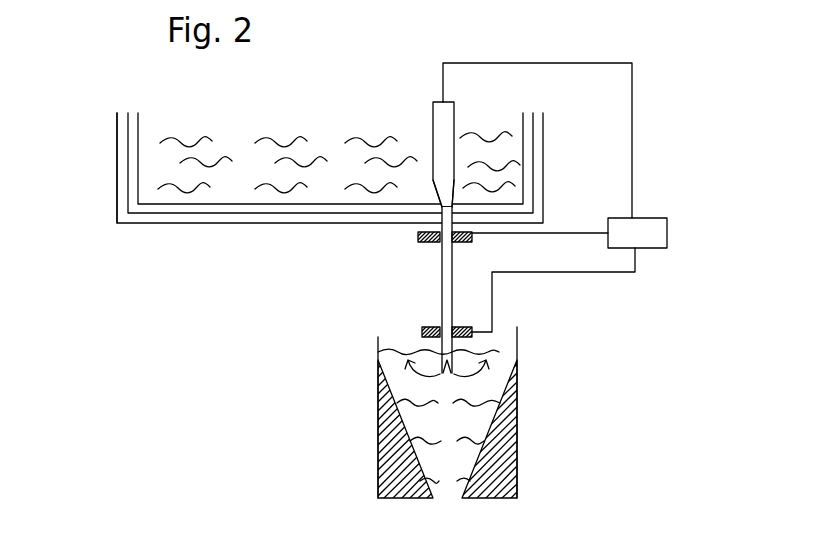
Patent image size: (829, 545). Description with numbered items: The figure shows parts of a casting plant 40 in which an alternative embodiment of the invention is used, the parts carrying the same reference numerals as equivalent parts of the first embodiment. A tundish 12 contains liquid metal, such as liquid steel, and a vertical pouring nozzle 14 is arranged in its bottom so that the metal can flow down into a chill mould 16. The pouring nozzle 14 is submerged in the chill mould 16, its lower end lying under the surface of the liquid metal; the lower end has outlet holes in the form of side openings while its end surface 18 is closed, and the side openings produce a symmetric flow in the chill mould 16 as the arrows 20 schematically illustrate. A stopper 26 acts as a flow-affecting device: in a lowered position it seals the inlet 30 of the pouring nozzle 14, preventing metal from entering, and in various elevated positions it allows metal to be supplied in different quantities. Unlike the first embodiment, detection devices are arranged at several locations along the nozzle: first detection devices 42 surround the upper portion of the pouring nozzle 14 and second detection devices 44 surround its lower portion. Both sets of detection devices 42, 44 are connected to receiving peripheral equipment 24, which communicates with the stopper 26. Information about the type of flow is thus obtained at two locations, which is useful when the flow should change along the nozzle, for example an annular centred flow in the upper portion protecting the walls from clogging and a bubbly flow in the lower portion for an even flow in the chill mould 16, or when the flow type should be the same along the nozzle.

The casting plant 40 is at (48, 135).
The tundish 12 is at (152, 218).
The stopper 26 is at (437, 118).
The inlet 30 is at (452, 197).
The pouring nozzle 14 is at (442, 285).
The receiving peripheral equipment 24 is at (667, 220).
The first detection devices 42 is at (418, 233).
The second detection devices 44 is at (422, 330).
The chill mould 16 is at (517, 455).
The arrows 20 is at (500, 397).
The end surface 18 is at (447, 377).